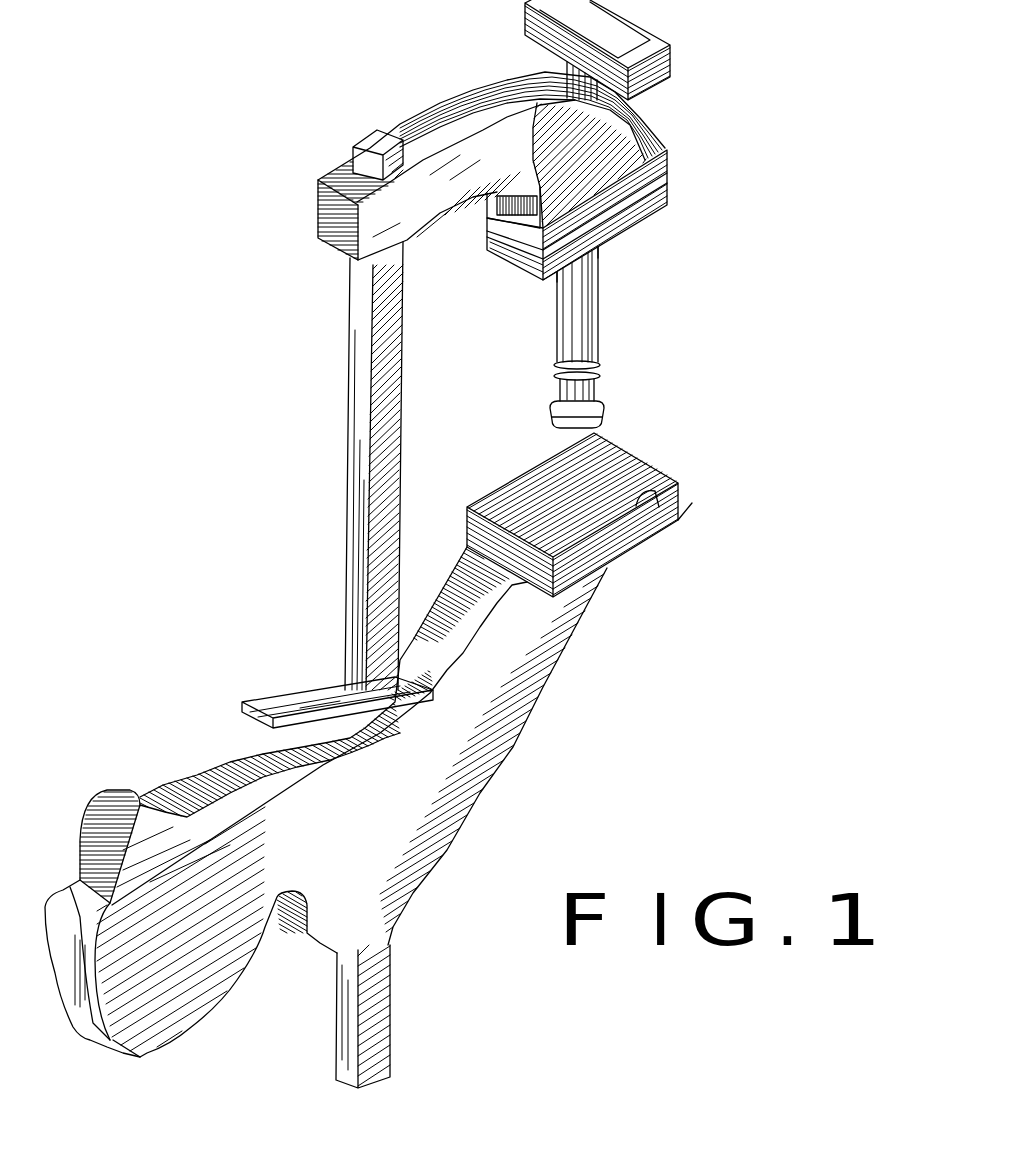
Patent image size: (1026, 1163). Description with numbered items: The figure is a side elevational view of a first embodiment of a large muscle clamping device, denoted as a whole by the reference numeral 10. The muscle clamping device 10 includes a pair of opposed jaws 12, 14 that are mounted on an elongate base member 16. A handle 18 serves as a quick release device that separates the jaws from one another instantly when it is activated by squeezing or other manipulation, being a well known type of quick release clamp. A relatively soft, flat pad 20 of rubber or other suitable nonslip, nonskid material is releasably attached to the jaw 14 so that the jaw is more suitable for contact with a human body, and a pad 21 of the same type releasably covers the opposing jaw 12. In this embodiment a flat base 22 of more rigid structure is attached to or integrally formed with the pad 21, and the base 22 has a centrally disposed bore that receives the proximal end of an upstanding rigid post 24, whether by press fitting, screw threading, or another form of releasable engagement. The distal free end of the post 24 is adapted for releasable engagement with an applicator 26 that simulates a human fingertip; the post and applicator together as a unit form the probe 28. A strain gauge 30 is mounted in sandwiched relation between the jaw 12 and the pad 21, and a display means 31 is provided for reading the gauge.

The muscle clamping device 10 is at (284, 126).
The jaw 12 is at (610, 103).
The jaw 14 is at (530, 687).
The elongate base member 16 is at (352, 462).
The handle 18 is at (272, 700).
The pad 20 is at (692, 507).
The pad 21 is at (660, 140).
The flat base 22 is at (668, 207).
The post 24 is at (600, 337).
The applicator 26 is at (600, 390).
The probe 28 is at (650, 277).
The strain gauge 30 is at (668, 175).
The display means 31 is at (668, 62).